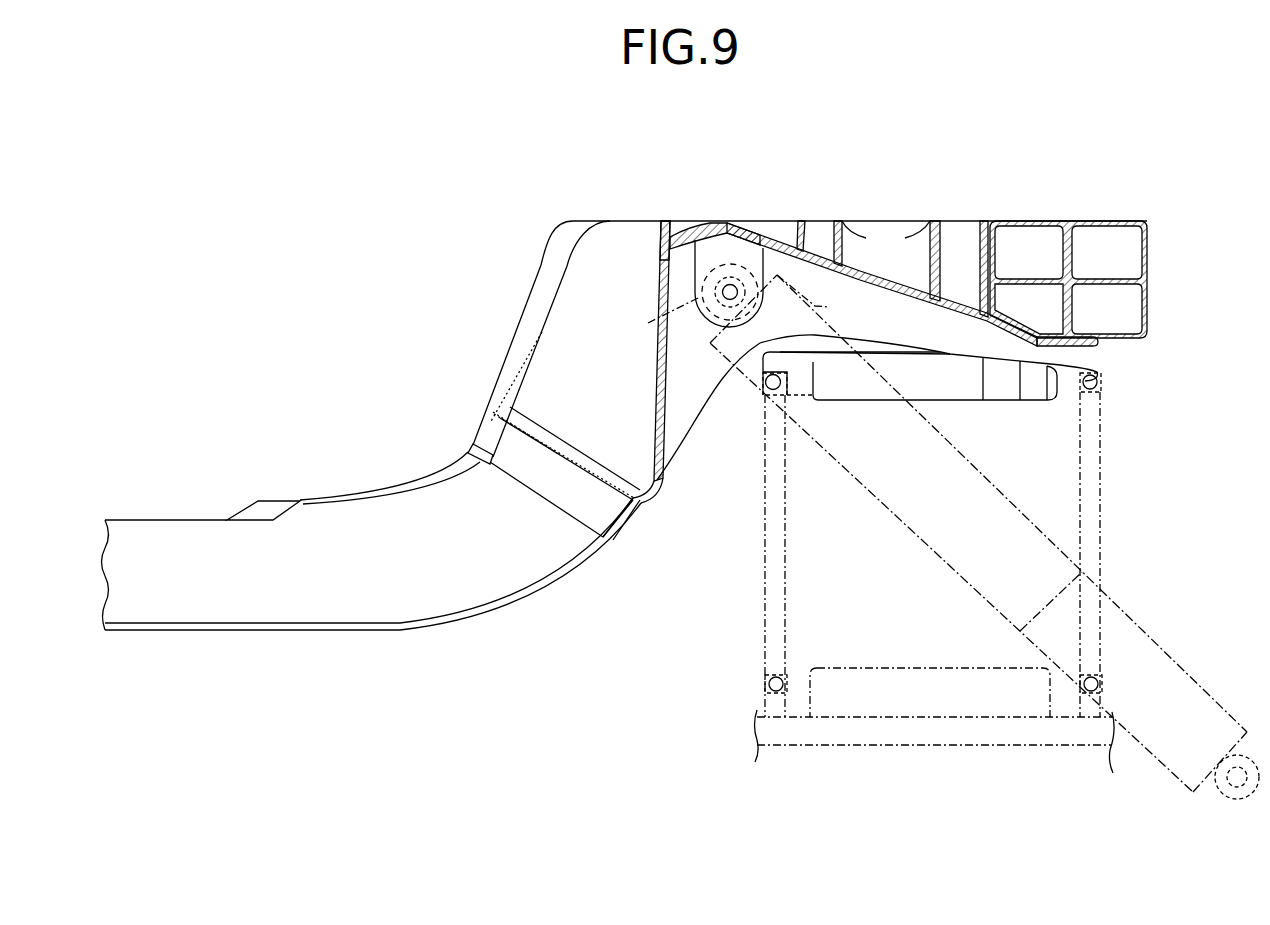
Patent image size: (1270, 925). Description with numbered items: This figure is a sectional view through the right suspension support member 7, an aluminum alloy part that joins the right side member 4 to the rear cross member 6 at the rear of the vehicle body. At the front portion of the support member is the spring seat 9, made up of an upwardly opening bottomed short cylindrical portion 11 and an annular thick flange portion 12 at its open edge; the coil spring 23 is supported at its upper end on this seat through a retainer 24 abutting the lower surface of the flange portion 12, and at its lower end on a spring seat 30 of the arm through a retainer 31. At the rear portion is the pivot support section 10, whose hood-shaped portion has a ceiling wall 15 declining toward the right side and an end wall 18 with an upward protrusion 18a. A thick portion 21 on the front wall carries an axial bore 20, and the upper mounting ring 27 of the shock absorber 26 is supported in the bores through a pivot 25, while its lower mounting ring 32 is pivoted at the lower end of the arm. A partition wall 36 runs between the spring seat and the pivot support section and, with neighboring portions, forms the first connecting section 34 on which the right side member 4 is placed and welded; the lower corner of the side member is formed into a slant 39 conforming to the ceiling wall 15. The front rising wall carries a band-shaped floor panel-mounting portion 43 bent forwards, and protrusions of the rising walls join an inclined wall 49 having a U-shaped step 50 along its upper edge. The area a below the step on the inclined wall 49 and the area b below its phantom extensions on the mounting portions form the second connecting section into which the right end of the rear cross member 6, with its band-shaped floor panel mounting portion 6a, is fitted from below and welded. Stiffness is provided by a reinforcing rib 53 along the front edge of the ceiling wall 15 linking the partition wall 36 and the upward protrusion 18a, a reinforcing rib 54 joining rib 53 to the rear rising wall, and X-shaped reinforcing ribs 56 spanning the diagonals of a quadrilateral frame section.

The right side member 4 is at (1110, 221).
The rear cross member 6 is at (316, 634).
The floor panel mounting portion 6a is at (160, 519).
The right suspension support member 7 is at (951, 219).
The spring seat 9 is at (1003, 402).
The pivot support section 10 is at (812, 371).
The bottomed short cylindrical portion 11 is at (943, 388).
The annular thick flange portion 12 is at (843, 348).
The ceiling wall 15 is at (893, 292).
The end wall 18 is at (656, 362).
The upward protrusion 18a is at (660, 221).
The axial bore 20 is at (730, 288).
The thick portion 21 is at (714, 249).
The coil spring 23 is at (1100, 482).
The retainer 24 is at (1103, 363).
The pivot 25 is at (653, 320).
The shock absorber 26 is at (923, 541).
The upper mounting ring 27 is at (824, 300).
The spring seat 30 is at (1007, 746).
The retainer 31 is at (790, 712).
The lower mounting ring 32 is at (1222, 790).
The first connecting section 34 is at (1078, 332).
The partition wall 36 is at (978, 250).
The slant 39 is at (1022, 301).
The floor panel-mounting portion 43 is at (522, 322).
The inclined wall 49 is at (617, 522).
The U-shaped step 50 is at (547, 432).
The reinforcing rib 53 is at (843, 221).
The reinforcing rib 54 is at (799, 221).
The X-shaped reinforcing ribs 56 is at (935, 234).
The area below the U-shaped step a is at (530, 475).
The area below phantom extensions of the U-shaped step b is at (484, 437).